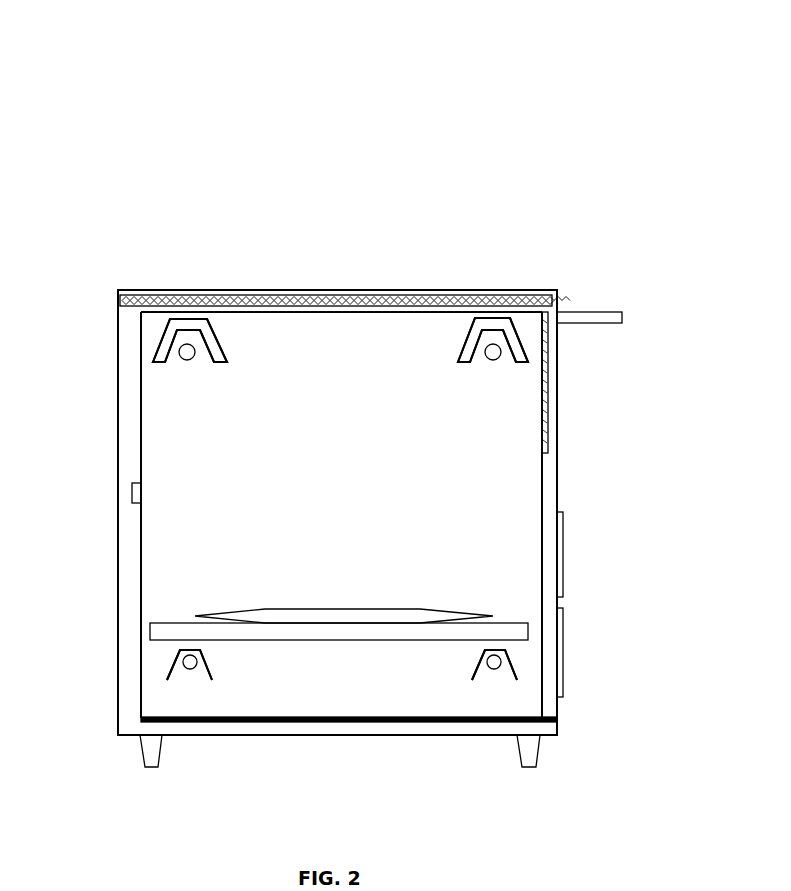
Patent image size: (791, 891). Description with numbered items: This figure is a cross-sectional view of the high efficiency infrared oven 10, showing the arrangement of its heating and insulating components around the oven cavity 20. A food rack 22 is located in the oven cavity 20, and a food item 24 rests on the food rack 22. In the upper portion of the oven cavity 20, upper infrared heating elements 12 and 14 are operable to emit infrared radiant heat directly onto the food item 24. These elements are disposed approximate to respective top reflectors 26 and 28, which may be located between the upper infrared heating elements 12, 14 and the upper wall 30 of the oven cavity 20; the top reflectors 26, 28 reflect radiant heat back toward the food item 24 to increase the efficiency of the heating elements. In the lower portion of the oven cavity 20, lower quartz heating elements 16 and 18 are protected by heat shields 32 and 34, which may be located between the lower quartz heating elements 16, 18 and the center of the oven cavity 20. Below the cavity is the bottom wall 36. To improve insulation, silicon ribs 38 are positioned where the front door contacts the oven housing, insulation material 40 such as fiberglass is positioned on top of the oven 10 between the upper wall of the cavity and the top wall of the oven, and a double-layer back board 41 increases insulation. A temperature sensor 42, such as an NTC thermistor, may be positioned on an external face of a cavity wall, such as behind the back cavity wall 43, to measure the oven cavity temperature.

The high efficiency oven 10 is at (672, 101).
The upper infrared heating element 12 is at (498, 360).
The upper infrared heating element 14 is at (187, 360).
The lower quartz heating element 16 is at (494, 669).
The lower quartz heating element 18 is at (190, 669).
The oven cavity 20 is at (336, 491).
The food rack 22 is at (170, 623).
The food item 24 is at (370, 607).
The top reflector 26 is at (468, 362).
The top reflector 28 is at (213, 362).
The upper wall 30 is at (375, 313).
The heat shield 32 is at (478, 668).
The heat shield 34 is at (208, 665).
The bottom wall 36 is at (312, 723).
The silicon rib 38 is at (548, 395).
The insulation material 40 is at (118, 301).
The double-layer back board 41 is at (137, 440).
The temperature sensor 42 is at (132, 490).
The back cavity wall 43 is at (141, 603).